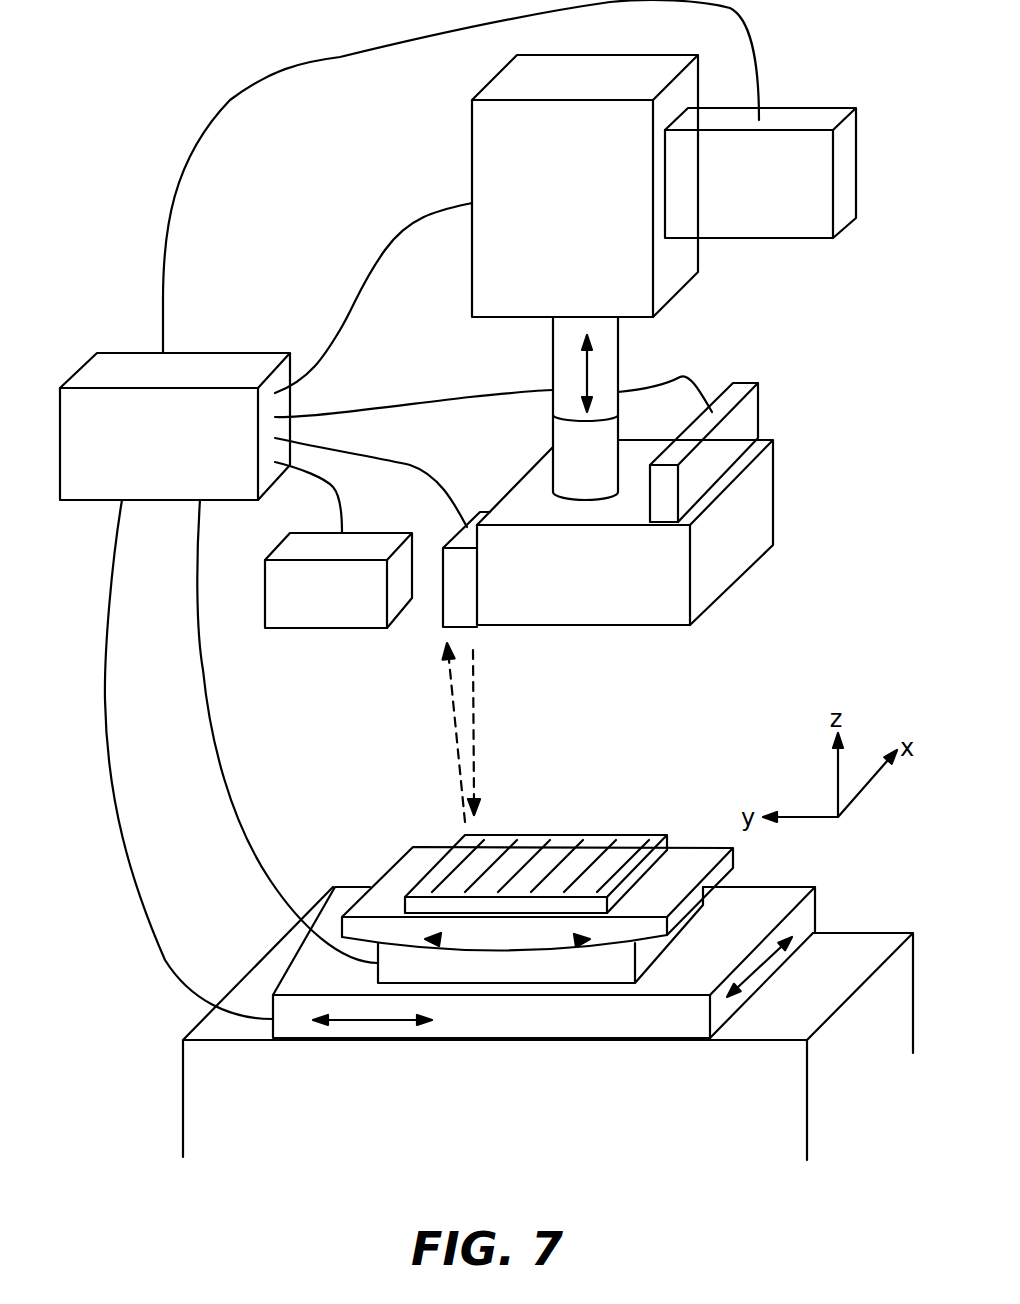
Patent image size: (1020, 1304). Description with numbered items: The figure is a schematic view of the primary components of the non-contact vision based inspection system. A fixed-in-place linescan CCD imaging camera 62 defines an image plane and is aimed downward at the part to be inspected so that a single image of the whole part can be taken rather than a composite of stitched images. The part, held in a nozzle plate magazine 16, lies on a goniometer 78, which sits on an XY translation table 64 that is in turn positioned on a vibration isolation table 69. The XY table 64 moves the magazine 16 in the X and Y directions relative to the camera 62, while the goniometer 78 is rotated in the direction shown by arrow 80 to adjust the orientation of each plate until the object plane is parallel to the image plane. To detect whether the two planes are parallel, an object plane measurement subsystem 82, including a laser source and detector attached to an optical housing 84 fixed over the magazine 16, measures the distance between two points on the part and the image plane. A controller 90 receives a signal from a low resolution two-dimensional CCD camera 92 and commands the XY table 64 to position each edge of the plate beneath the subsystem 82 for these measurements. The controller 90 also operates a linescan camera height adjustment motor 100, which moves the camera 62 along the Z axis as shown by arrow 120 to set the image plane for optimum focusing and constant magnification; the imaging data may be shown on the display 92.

The nozzle plate magazine 16 is at (623, 845).
The linescan CCD imaging camera 62 is at (472, 137).
The XY translation table 64 is at (803, 920).
The vibration isolation table 69 is at (865, 1030).
The goniometer 78 is at (653, 950).
The arrow 80 is at (493, 937).
The object plane measurement subsystem 82 is at (453, 612).
The optical housing 84 is at (743, 505).
The controller 90 is at (120, 360).
The low resolution 2-D CCD camera / display 92 is at (742, 387).
The linescan camera height adjustment motor 100 is at (843, 163).
The arrow 120 is at (623, 360).